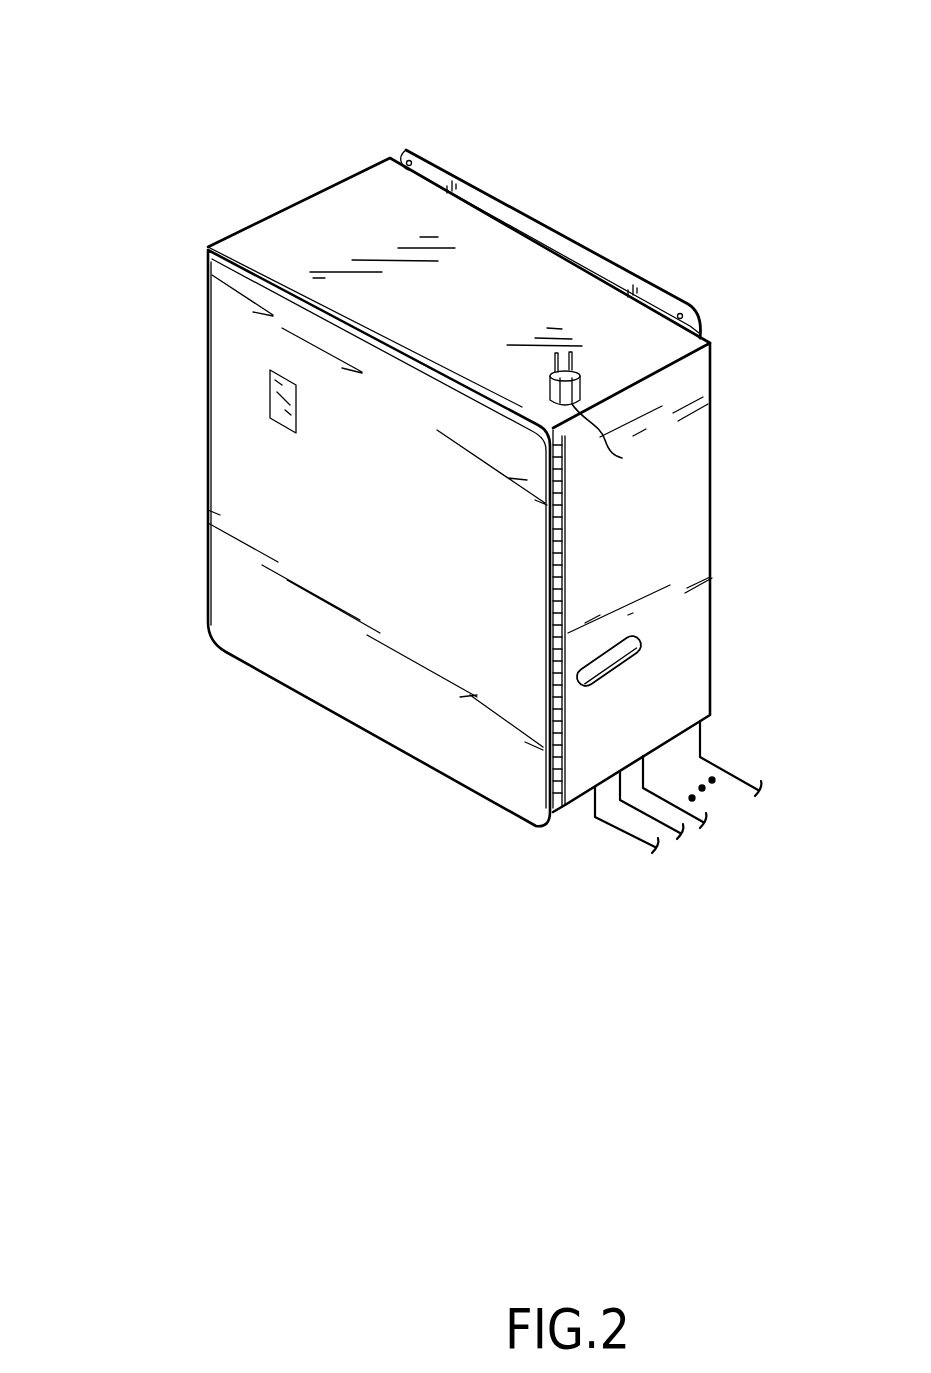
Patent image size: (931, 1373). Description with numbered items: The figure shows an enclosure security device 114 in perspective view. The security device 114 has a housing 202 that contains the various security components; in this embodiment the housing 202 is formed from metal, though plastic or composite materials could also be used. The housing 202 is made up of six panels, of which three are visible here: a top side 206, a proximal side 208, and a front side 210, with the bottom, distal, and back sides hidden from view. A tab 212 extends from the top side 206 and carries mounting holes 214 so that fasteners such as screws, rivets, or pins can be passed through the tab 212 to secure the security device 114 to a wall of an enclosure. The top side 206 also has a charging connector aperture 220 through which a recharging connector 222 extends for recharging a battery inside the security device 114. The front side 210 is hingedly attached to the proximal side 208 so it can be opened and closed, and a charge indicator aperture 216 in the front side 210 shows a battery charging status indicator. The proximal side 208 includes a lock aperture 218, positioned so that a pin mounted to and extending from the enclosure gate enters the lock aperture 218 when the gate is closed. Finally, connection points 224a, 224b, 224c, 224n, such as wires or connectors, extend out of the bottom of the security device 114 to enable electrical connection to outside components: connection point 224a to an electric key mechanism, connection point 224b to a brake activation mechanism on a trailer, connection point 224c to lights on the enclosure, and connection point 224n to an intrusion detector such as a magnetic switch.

The enclosure security device 114 is at (280, 46).
The housing 202 is at (166, 373).
The top side 206 is at (333, 210).
The proximal side 208 is at (688, 478).
The front side 210 is at (312, 670).
The tab 212 is at (545, 228).
The mounting holes 214 is at (412, 161).
The charge indicator aperture 216 is at (297, 410).
The lock aperture 218 is at (603, 662).
The charging connector aperture 220 is at (619, 439).
The recharging connector 222 is at (548, 380).
The connection point 224a is at (625, 828).
The connection point 224b is at (670, 832).
The connection point 224c is at (685, 815).
The connection point 224n is at (735, 778).